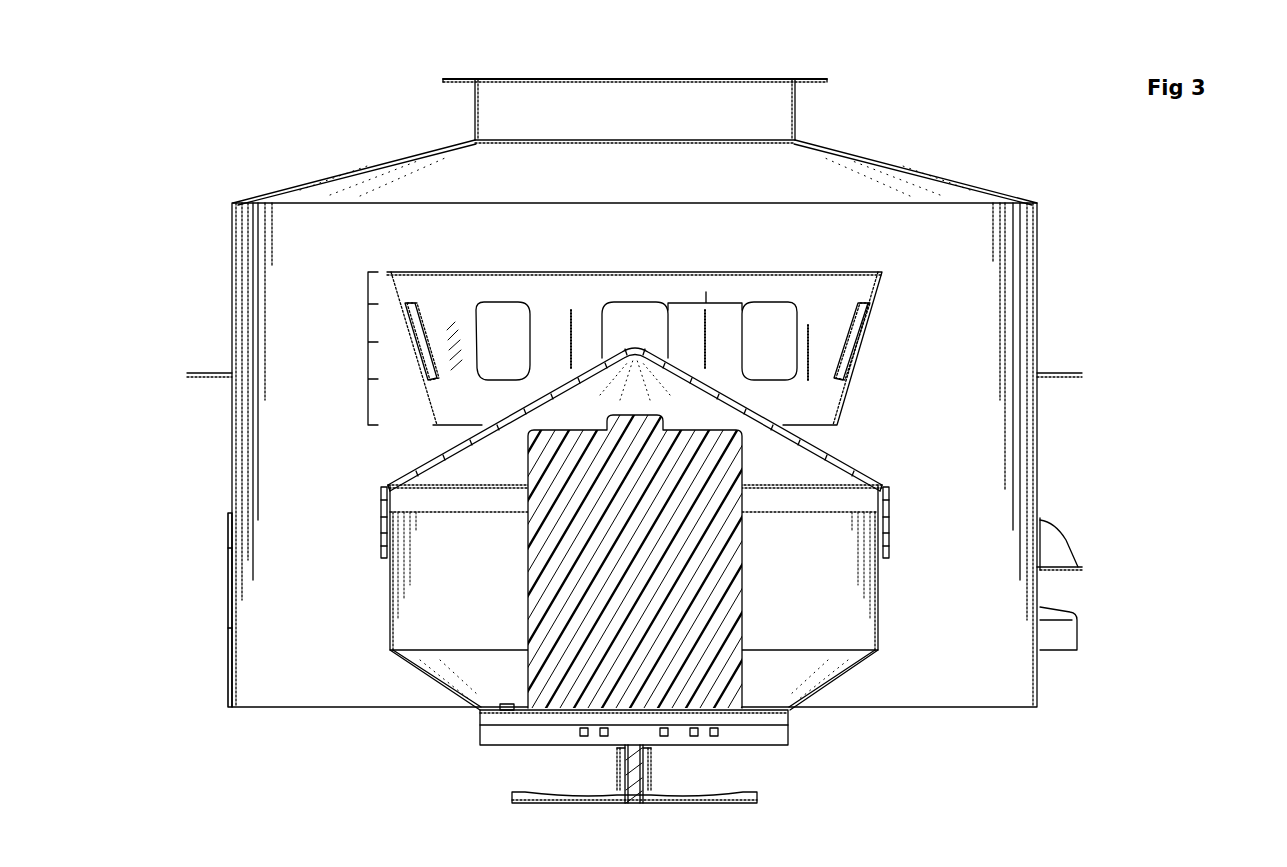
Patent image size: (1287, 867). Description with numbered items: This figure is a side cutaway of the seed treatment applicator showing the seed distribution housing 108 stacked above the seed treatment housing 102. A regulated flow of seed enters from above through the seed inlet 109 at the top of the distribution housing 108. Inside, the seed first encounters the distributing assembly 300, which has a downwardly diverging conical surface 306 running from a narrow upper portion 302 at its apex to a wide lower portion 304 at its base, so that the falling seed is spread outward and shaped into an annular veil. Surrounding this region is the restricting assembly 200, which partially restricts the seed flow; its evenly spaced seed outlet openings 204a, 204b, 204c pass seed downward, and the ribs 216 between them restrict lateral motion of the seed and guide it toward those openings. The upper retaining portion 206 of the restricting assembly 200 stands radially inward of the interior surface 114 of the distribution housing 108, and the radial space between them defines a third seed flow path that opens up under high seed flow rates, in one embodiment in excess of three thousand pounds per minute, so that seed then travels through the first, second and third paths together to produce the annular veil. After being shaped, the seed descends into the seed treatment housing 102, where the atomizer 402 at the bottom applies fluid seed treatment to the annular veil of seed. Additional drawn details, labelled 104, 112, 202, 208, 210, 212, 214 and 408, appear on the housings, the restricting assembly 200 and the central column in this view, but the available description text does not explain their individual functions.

The seed treatment housing 102 is at (228, 648).
The mounting bracket 104 is at (1078, 568).
The seed distribution housing 108 is at (330, 177).
The seed inlet 109 is at (530, 80).
The side port 112 is at (1065, 373).
The interior surface 114 is at (982, 301).
The restricting assembly 200 is at (434, 268).
The plate surface 202 is at (566, 316).
The seed outlet opening 204a is at (487, 300).
The seed outlet opening 204b is at (648, 300).
The seed outlet opening 204c is at (778, 300).
The upper retaining portion 206 is at (366, 289).
The lower plate portion 208 is at (366, 400).
The middle plate portion 210 is at (366, 341).
The plate side edge 212 is at (855, 270).
The plate bottom edge 214 is at (826, 430).
The ribs 216 is at (705, 289).
The distributing assembly 300 is at (360, 522).
The narrow upper portion 302 is at (562, 372).
The wide lower portion 304 is at (384, 482).
The downwardly diverging conical surface 306 is at (872, 480).
The atomizer 402 is at (735, 804).
The central column 408 is at (744, 600).